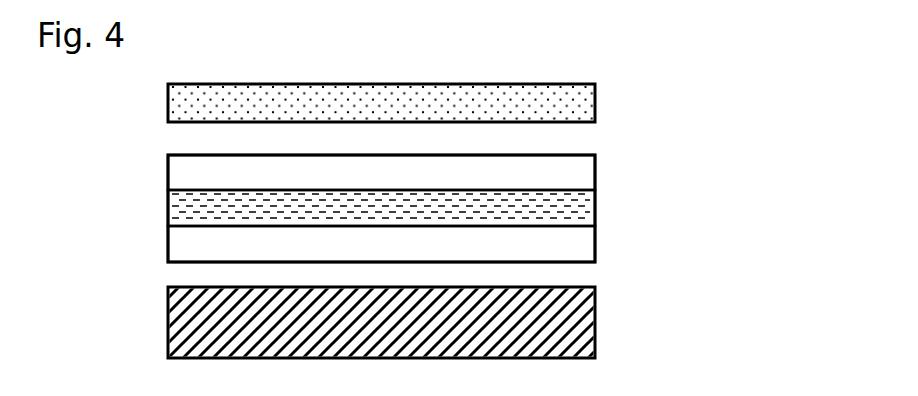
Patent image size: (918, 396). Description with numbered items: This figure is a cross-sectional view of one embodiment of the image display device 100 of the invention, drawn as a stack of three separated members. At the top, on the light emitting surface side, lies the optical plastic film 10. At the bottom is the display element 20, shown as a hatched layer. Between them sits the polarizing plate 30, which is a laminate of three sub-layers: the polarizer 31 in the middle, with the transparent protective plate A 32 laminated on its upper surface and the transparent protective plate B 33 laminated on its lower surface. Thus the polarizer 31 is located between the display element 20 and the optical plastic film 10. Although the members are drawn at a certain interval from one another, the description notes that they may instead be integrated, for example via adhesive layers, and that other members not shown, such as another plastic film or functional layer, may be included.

The image display device 100 is at (507, 221).
The optical plastic film 10 is at (567, 103).
The display element 20 is at (575, 322).
The polarizing plate 30 is at (460, 206).
The polarizer 31 is at (580, 205).
The transparent protective plate A 32 is at (582, 172).
The transparent protective plate B 33 is at (582, 243).